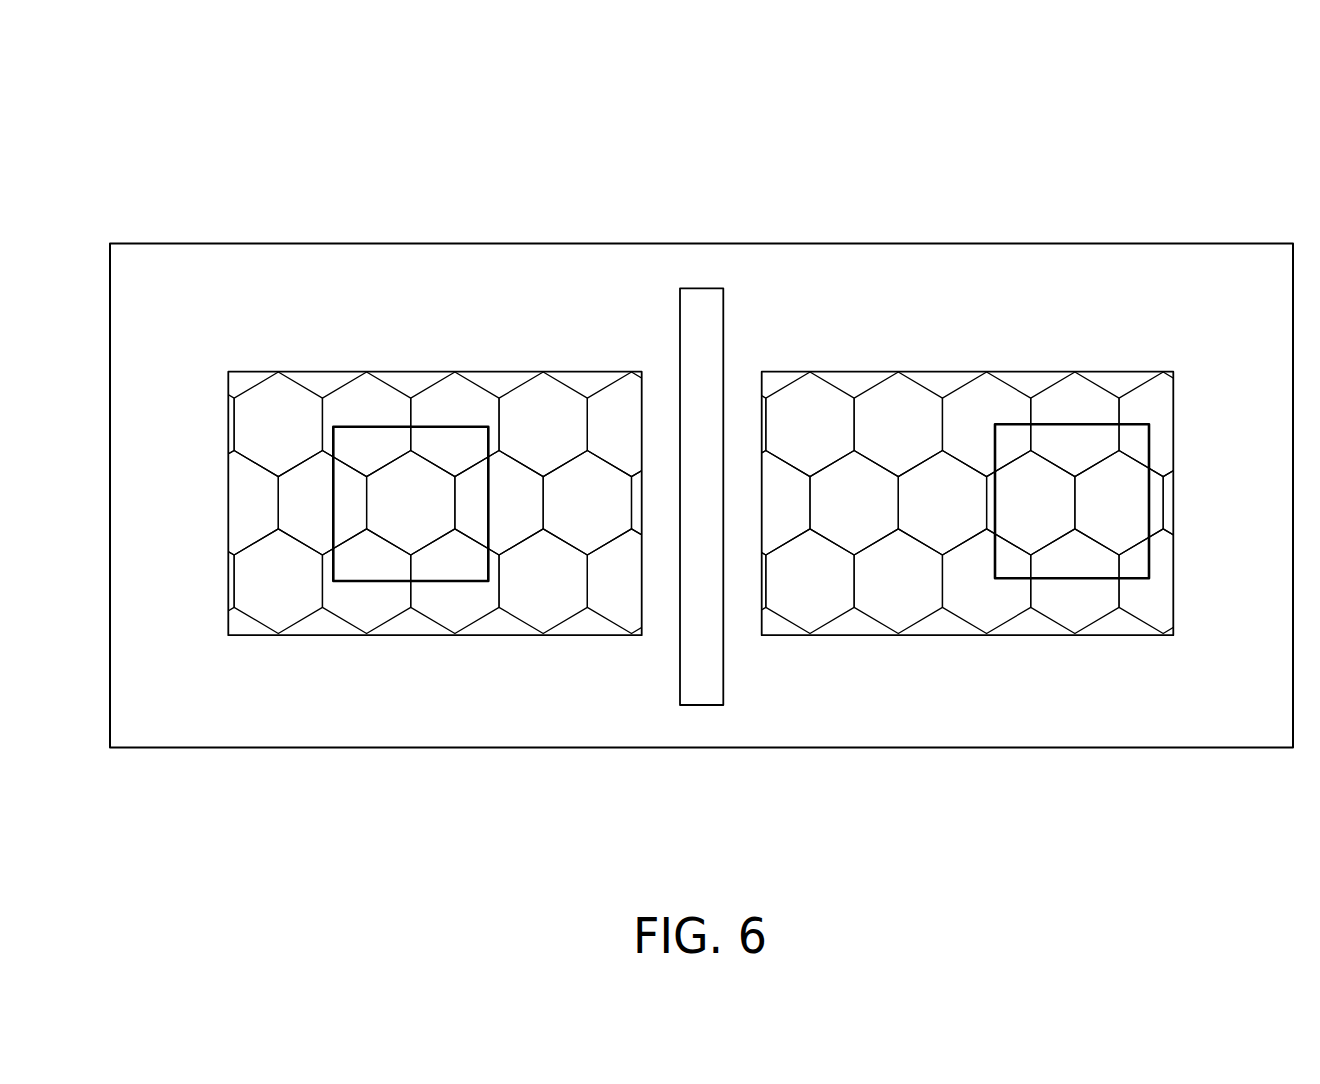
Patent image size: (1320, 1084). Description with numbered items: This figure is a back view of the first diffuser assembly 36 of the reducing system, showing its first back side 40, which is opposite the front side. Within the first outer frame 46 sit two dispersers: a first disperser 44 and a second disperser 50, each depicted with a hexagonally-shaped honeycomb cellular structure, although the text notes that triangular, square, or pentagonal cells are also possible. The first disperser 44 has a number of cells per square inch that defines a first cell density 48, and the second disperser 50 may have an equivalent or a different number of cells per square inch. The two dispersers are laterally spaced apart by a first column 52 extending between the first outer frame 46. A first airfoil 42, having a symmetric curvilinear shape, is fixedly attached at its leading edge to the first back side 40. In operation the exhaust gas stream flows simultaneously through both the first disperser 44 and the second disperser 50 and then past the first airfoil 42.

The first diffuser assembly 36 is at (1011, 148).
The first back side 40 is at (352, 697).
The first airfoil 42 is at (704, 315).
The first disperser 44 is at (910, 412).
The first outer frame 46 is at (812, 325).
The first cell density 48 is at (405, 427).
The second disperser 50 is at (518, 388).
The first column 52 is at (666, 609).